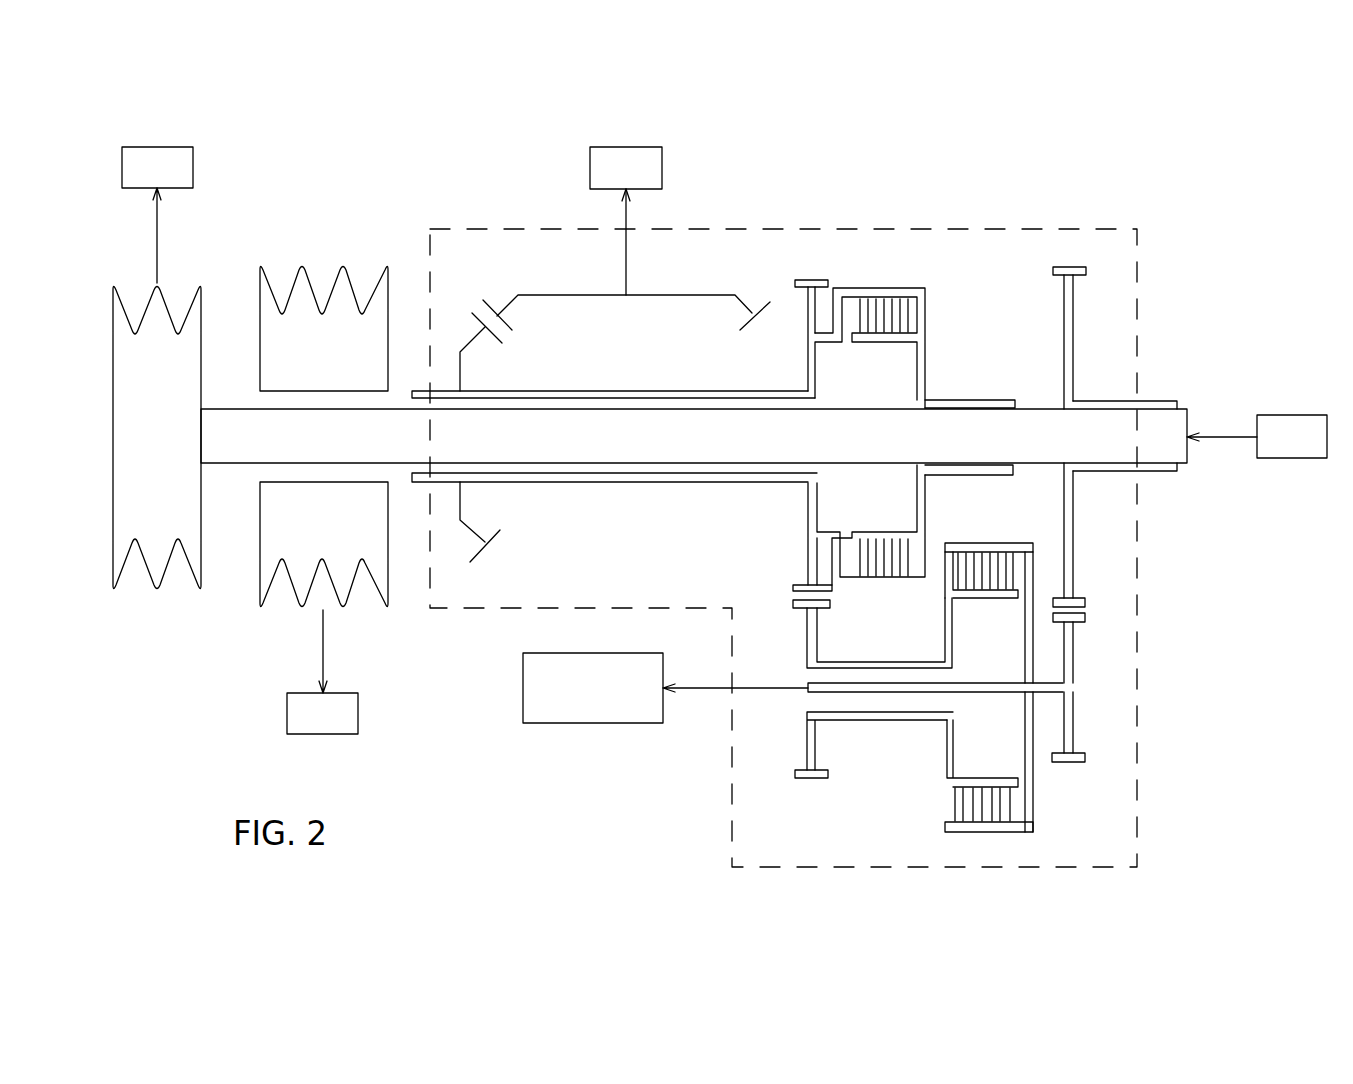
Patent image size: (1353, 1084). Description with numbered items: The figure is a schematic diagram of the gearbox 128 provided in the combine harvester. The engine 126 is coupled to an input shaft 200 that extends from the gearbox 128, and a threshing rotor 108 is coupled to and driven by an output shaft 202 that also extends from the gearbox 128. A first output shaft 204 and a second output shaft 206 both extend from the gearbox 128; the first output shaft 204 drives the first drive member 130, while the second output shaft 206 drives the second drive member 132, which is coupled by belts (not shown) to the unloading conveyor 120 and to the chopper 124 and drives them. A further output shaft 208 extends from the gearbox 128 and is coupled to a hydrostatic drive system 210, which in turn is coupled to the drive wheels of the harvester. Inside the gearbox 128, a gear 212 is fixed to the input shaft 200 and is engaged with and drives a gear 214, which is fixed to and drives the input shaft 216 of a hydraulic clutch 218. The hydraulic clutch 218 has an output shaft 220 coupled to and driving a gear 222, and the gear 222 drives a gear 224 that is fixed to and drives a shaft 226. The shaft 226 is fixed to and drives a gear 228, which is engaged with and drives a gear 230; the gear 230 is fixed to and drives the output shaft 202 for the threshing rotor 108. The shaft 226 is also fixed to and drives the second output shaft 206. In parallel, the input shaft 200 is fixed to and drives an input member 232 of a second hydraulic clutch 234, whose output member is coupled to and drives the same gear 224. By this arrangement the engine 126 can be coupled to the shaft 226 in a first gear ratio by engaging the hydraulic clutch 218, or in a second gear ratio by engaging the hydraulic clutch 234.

The threshing rotor 108 is at (620, 147).
The unloading conveyor 120 is at (150, 147).
The chopper 124 is at (358, 703).
The engine 126 is at (1280, 415).
The gearbox 128 is at (1098, 228).
The first drive member 130 is at (113, 400).
The second drive member 132 is at (308, 277).
The input shaft 200 is at (1153, 400).
The output shaft 202 is at (627, 210).
The first output shaft 204 is at (233, 409).
The second output shaft 206 is at (398, 389).
The output shaft 208 is at (712, 690).
The hydrostatic drive system 210 is at (562, 723).
The gear 212 is at (1073, 317).
The gear 214 is at (1073, 732).
The input shaft 216 is at (1002, 832).
The hydraulic clutch 218 is at (926, 843).
The output shaft 220 is at (868, 720).
The gear 222 is at (815, 643).
The gear 224 is at (808, 303).
The shaft 226 is at (563, 390).
The gear 228 is at (500, 531).
The gear 230 is at (508, 303).
The input member 232 is at (925, 367).
The hydraulic clutch 234 is at (872, 217).